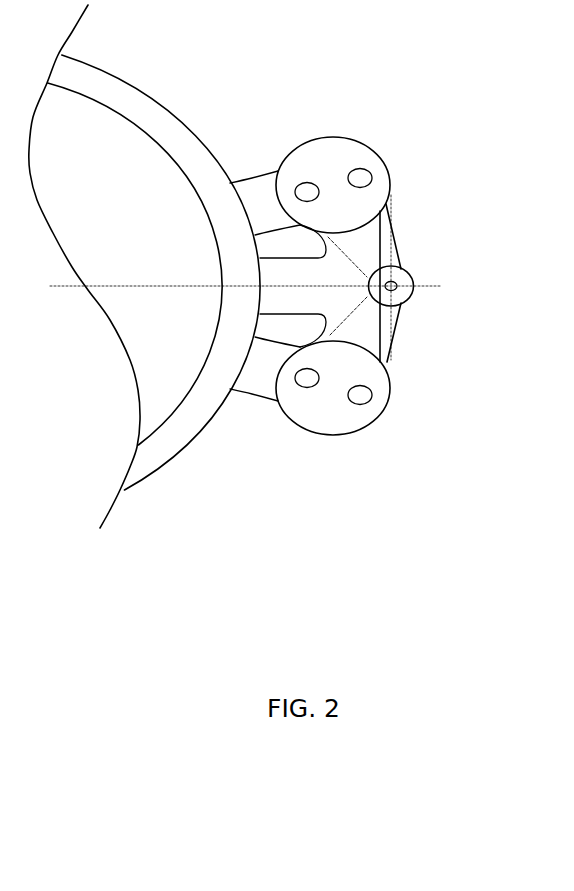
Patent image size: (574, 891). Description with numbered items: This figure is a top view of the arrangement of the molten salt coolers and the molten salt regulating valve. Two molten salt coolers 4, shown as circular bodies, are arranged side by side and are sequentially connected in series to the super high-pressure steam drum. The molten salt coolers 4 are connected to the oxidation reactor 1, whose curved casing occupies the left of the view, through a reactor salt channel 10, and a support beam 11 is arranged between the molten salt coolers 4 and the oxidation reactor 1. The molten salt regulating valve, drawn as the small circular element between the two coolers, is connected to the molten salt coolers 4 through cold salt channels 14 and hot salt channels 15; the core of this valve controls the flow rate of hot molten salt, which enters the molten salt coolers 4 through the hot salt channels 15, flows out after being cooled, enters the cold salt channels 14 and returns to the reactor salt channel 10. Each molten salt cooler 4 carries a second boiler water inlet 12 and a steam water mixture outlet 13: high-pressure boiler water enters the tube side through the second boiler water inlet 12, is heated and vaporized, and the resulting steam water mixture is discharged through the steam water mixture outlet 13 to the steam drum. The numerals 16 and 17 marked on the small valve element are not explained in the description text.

The oxidation reactor 1 is at (143, 132).
The reactor salt channel 10 is at (205, 143).
The support beam 11 is at (258, 176).
The second boiler water inlet 12 is at (313, 181).
The molten salt cooler 4 is at (373, 178).
The steam water mixture outlet 13 is at (389, 178).
The cold salt channel 14 is at (382, 238).
The hot salt channel 15 is at (395, 247).
The hub disc 16 is at (410, 277).
The center hole 17 is at (397, 285).